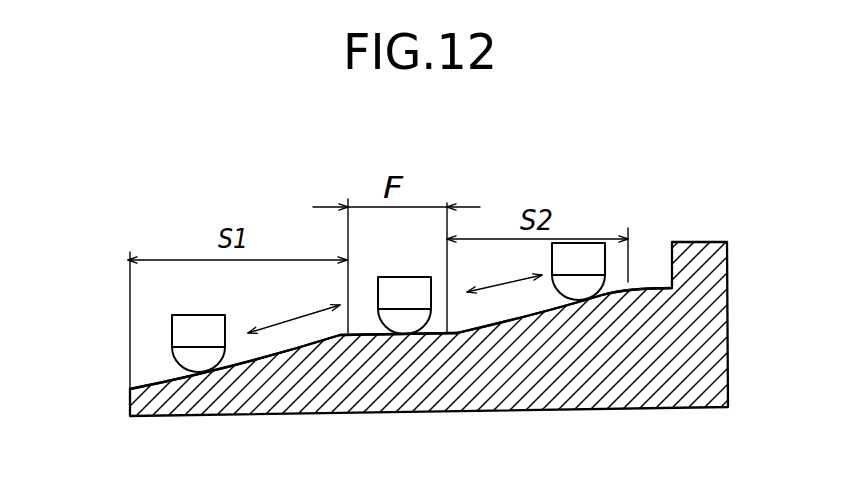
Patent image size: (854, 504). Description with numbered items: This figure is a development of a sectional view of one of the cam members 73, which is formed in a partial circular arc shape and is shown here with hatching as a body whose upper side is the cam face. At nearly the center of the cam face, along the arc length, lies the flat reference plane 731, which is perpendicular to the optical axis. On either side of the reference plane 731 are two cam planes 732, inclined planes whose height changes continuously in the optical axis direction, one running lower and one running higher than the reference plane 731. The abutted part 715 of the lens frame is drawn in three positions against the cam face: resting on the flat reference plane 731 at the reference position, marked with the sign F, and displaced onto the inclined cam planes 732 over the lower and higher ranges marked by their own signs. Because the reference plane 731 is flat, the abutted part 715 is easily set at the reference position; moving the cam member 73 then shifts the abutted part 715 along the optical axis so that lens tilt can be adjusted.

The cam member 73 is at (427, 344).
The reference plane 731 is at (360, 322).
The cam plane 732 is at (387, 289).
The abutted part 715 is at (335, 285).